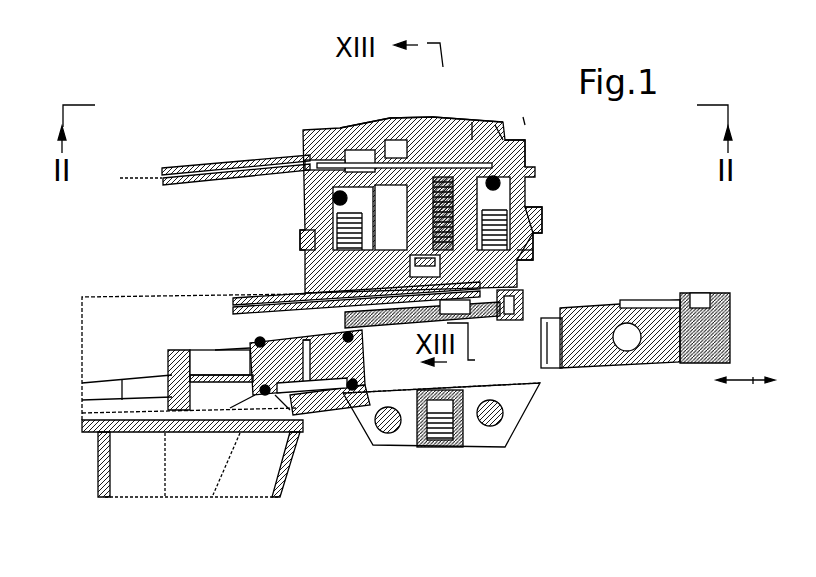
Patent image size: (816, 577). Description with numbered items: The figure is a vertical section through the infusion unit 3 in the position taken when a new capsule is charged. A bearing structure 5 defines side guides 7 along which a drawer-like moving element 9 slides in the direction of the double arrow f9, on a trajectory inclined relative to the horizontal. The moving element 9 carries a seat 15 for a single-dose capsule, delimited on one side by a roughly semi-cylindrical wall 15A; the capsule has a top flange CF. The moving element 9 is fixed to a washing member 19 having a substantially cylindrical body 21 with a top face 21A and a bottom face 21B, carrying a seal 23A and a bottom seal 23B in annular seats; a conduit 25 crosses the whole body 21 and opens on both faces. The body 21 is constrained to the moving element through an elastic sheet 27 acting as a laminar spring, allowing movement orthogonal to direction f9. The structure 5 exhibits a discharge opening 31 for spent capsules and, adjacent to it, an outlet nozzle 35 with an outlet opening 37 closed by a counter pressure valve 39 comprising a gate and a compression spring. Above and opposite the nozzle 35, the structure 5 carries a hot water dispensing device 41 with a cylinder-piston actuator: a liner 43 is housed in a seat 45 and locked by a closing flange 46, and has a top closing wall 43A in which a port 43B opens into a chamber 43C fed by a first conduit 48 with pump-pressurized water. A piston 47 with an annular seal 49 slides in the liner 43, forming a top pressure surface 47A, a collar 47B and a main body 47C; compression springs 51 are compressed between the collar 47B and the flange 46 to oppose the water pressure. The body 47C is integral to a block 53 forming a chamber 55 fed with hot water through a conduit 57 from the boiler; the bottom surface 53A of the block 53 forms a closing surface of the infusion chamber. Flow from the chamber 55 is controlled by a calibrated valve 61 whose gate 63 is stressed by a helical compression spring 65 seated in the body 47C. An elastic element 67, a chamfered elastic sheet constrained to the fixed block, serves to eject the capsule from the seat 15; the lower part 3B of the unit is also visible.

The infusion unit 3 is at (524, 116).
The housing bottom 3B is at (108, 477).
The bearing structure 5 is at (95, 318).
The side guides 7 is at (143, 383).
The moving element 9 is at (690, 376).
The seat 15 is at (640, 380).
The wall 15A is at (660, 305).
The washing member 19 is at (255, 392).
The substantially cylindrical body 21 is at (245, 393).
The top face 21A is at (252, 330).
The bottom face 21B is at (287, 407).
The seal 23A is at (215, 355).
The bottom seal 23B is at (353, 387).
The conduit 25 is at (305, 347).
The elastic sheet 27 is at (197, 387).
The discharge opening 31 is at (95, 455).
The outlet nozzle 35 is at (492, 450).
The outlet opening 37 is at (435, 400).
The counter pressure valve 39 is at (413, 437).
The hot water dispensing device 41 is at (545, 199).
The liner 43 is at (310, 218).
The top closing wall 43A is at (472, 123).
The port 43B is at (377, 137).
The chamber 43C is at (330, 130).
The seat 45 is at (525, 145).
The closing flange 46 is at (533, 245).
The piston 47 is at (528, 158).
The pressure surface 47A is at (438, 115).
The collar 47B is at (530, 187).
The main body 47C is at (547, 213).
The first conduit 48 is at (205, 165).
The annular seal 49 is at (310, 197).
The compression springs 51 is at (533, 257).
The block 53 is at (530, 280).
The bottom surface 53A is at (503, 340).
The chamber 55 is at (443, 313).
The conduit 57 is at (265, 297).
The calibrated valve 61 is at (418, 262).
The gate 63 is at (391, 192).
The helical compression spring 65 is at (495, 127).
The elastic element 67 is at (530, 320).
The top flange CF is at (703, 297).
The double arrow f9 is at (745, 395).